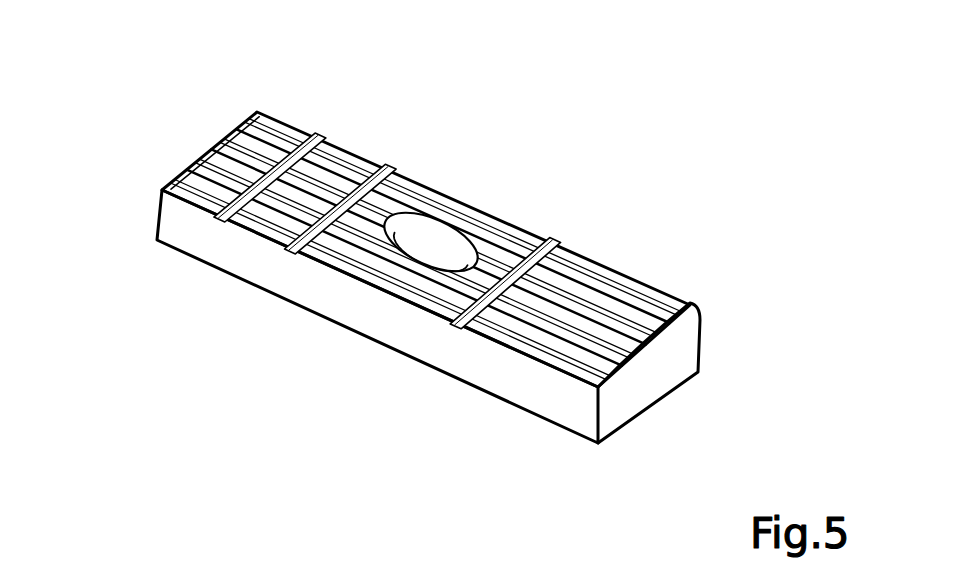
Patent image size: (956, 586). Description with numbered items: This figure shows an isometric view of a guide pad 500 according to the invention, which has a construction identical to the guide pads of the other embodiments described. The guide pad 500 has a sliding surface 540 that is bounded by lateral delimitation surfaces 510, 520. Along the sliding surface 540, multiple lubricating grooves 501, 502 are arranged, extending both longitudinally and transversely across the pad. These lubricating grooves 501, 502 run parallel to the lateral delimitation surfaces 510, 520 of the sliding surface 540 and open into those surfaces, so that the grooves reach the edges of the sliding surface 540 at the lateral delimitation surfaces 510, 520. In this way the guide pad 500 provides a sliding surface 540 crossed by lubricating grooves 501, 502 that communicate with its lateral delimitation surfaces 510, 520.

The guide pad 500 is at (235, 121).
The lubricating groove 501 is at (377, 177).
The lubricating groove 502 is at (195, 158).
The lateral delimitation surface 510 is at (403, 330).
The lateral delimitation surface 520 is at (668, 370).
The sliding surface 540 is at (435, 205).